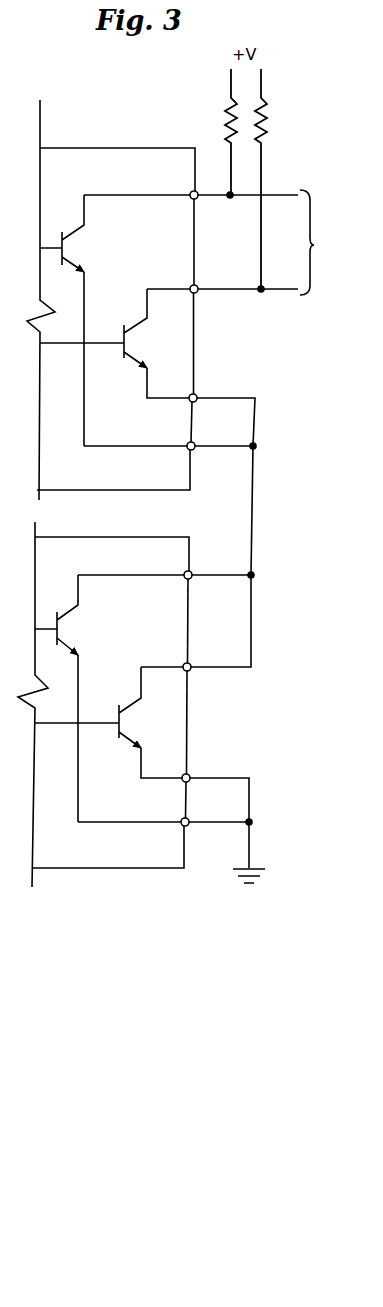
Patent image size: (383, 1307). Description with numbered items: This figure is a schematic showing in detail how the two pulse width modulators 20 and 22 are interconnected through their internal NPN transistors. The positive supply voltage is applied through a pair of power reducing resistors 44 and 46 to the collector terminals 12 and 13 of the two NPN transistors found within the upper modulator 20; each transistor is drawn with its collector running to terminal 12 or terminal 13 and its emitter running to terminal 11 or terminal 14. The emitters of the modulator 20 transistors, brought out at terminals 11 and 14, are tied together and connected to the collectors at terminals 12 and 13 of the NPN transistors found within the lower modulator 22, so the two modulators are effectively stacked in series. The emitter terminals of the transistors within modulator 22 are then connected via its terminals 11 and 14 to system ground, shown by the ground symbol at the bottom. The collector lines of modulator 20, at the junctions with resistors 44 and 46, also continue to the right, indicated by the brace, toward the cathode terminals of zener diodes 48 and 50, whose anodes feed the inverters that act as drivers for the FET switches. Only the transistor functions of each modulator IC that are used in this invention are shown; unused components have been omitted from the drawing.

The pulse width modulator 20 is at (117, 159).
The pulse width modulator 22 is at (133, 862).
The power reducing resistor 44 is at (275, 120).
The power reducing resistor 46 is at (224, 112).
The emitter terminal 11 is at (198, 580).
The collector terminal 12 is at (199, 378).
The collector terminal 13 is at (199, 471).
The emitter terminal 14 is at (198, 626).
The zener diode 48 is at (324, 242).
The zener diode 50 is at (336, 280).